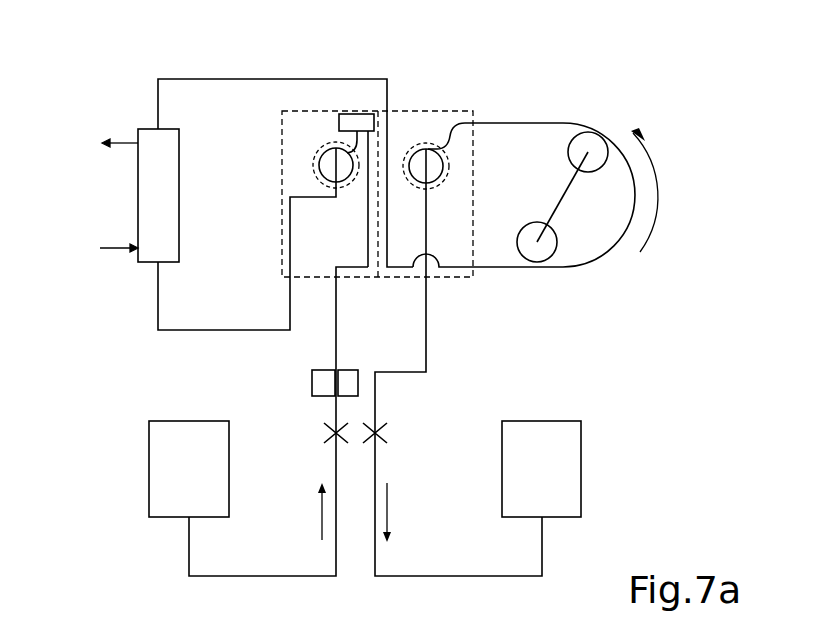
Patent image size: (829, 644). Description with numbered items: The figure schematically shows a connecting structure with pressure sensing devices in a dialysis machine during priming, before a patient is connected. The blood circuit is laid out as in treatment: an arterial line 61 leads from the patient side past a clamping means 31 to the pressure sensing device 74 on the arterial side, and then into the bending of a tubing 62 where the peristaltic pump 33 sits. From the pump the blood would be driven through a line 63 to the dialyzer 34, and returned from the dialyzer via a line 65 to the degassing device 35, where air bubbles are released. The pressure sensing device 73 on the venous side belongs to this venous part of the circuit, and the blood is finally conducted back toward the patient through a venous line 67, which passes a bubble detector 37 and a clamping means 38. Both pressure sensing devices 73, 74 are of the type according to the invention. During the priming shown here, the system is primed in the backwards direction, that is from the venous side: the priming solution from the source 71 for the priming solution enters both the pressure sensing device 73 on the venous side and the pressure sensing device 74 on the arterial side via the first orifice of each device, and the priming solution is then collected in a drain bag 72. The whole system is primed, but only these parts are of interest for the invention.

The line 63 is at (220, 79).
The dialyzer 34 is at (148, 193).
The line 65 is at (220, 329).
The degassing device 35 is at (357, 120).
The pressure sensing device 73 is at (345, 167).
The pressure sensing device 74 is at (432, 165).
The tubing 62 is at (618, 243).
The peristaltic pump 33 is at (595, 142).
The arterial line 61 is at (426, 325).
The venous line 67 is at (337, 325).
The bubble detector 37 is at (312, 382).
The clamping means 38 is at (326, 432).
The clamping means 31 is at (384, 433).
The source for the priming solution 71 is at (167, 450).
The drain bag 72 is at (570, 469).